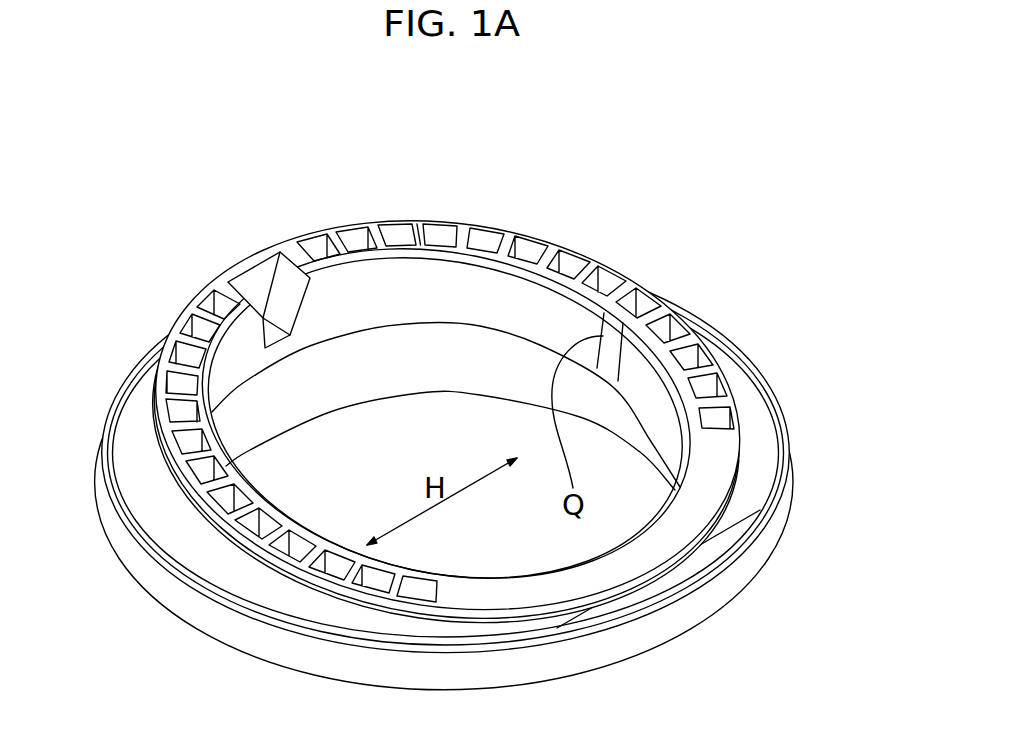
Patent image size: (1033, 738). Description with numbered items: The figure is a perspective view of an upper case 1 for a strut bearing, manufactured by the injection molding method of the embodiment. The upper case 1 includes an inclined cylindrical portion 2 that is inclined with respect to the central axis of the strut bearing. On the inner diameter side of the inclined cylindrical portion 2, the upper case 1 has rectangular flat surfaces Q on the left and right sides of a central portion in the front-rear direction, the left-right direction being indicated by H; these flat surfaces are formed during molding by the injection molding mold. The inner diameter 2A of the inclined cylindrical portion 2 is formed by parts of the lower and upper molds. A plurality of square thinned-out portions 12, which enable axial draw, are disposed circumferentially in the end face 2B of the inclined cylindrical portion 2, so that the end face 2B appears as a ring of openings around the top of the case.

The upper case 1 is at (620, 237).
The inclined cylindrical portion 2 is at (447, 395).
The inner diameter 2A is at (520, 296).
The end face 2B is at (378, 228).
The square thinned-out portions 12 is at (488, 232).